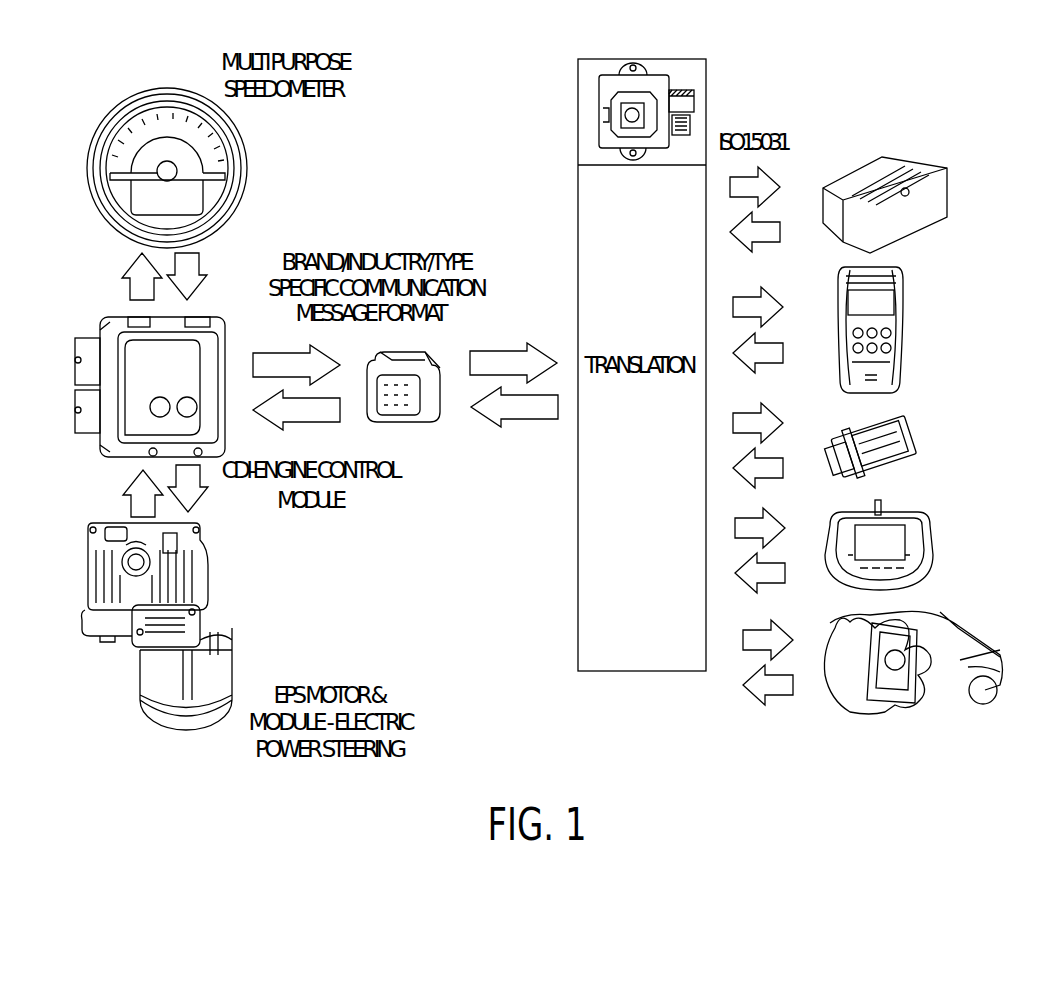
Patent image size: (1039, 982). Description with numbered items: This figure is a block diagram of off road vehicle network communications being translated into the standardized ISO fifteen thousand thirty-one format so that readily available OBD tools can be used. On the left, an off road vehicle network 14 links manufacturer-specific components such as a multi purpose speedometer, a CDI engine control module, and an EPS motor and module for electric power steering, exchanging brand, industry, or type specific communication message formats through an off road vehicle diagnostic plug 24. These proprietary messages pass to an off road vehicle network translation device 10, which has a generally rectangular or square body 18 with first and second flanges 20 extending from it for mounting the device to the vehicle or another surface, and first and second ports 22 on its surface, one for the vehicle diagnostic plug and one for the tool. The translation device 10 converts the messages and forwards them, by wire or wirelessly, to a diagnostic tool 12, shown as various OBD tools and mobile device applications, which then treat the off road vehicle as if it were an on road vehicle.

The off road vehicle network translation device 10 is at (576, 142).
The diagnostic tool 12 is at (835, 163).
The off road vehicle network 14 is at (305, 211).
The body 18 is at (655, 86).
The flange 20 is at (633, 68).
The port 22 is at (688, 118).
The vehicle connector 24 is at (422, 418).